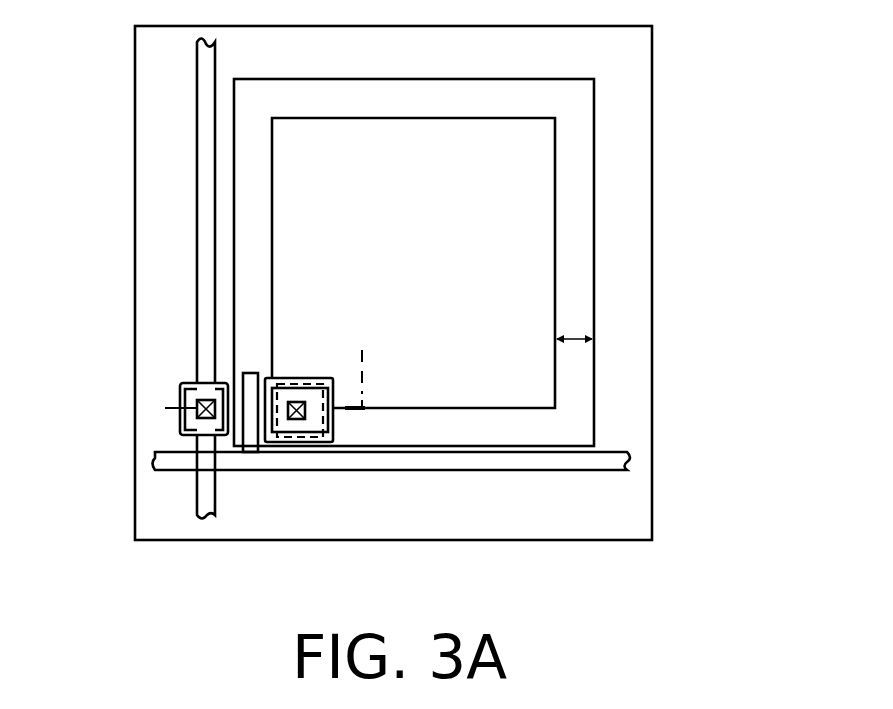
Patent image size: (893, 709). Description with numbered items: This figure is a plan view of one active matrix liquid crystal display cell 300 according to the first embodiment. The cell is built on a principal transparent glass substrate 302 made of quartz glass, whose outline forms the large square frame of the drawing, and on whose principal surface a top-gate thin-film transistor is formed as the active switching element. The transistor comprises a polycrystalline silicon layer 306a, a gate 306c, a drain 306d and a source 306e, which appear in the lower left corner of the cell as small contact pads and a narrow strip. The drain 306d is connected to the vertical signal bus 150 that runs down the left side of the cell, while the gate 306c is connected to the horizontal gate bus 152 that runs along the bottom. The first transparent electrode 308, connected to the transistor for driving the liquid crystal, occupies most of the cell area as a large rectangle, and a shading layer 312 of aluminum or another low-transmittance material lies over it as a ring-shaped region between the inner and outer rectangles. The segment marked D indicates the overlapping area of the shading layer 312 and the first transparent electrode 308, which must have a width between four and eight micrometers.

The active matrix liquid crystal display cell 300 is at (675, 32).
The principal transparent glass substrate 302 is at (653, 60).
The first transparent electrode 308 is at (595, 216).
The shading layer 312 is at (653, 115).
The signal buses 150 is at (202, 102).
The gate buses 152 is at (612, 452).
The polycrystalline silicon layer 306a is at (220, 438).
The gate 306c is at (252, 373).
The drain 306d is at (182, 416).
The source 306e is at (322, 445).